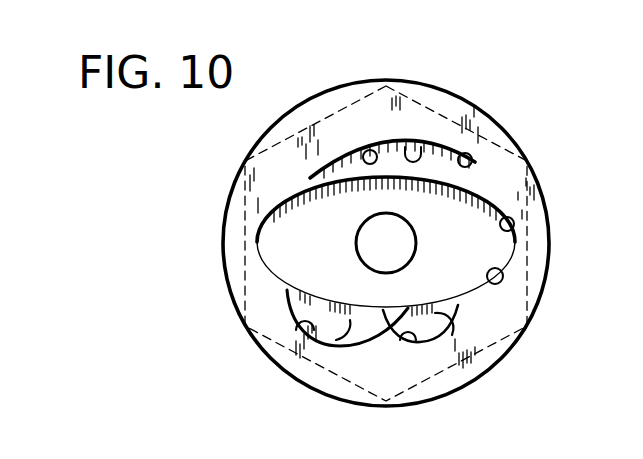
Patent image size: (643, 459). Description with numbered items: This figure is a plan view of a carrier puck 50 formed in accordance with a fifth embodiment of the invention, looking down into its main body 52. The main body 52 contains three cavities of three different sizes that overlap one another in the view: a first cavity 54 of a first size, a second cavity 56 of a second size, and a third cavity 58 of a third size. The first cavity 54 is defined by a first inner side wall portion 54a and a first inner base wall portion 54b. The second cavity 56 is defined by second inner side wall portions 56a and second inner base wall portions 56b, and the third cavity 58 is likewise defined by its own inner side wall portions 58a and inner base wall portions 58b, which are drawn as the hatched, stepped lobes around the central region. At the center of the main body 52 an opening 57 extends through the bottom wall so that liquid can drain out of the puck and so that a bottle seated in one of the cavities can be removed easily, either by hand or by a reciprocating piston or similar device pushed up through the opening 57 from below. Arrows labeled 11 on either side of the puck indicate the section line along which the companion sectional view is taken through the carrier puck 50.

The section line 11- 11 is at (184, 207).
The carrier puck 50 is at (500, 135).
The main body 52 is at (457, 373).
The first cavity 54 is at (497, 265).
The first inner side wall portion 54a is at (503, 215).
The first inner base wall portion 54b is at (523, 195).
The second cavity 56 is at (423, 140).
The second inner side wall portions 56a is at (493, 140).
The second inner base wall portions 56b is at (455, 142).
The opening 57 is at (371, 248).
The third cavity 58 is at (374, 150).
The inner side wall portions of the third cavity 58a is at (330, 147).
The inner base wall portions of the third cavity 58b is at (366, 155).